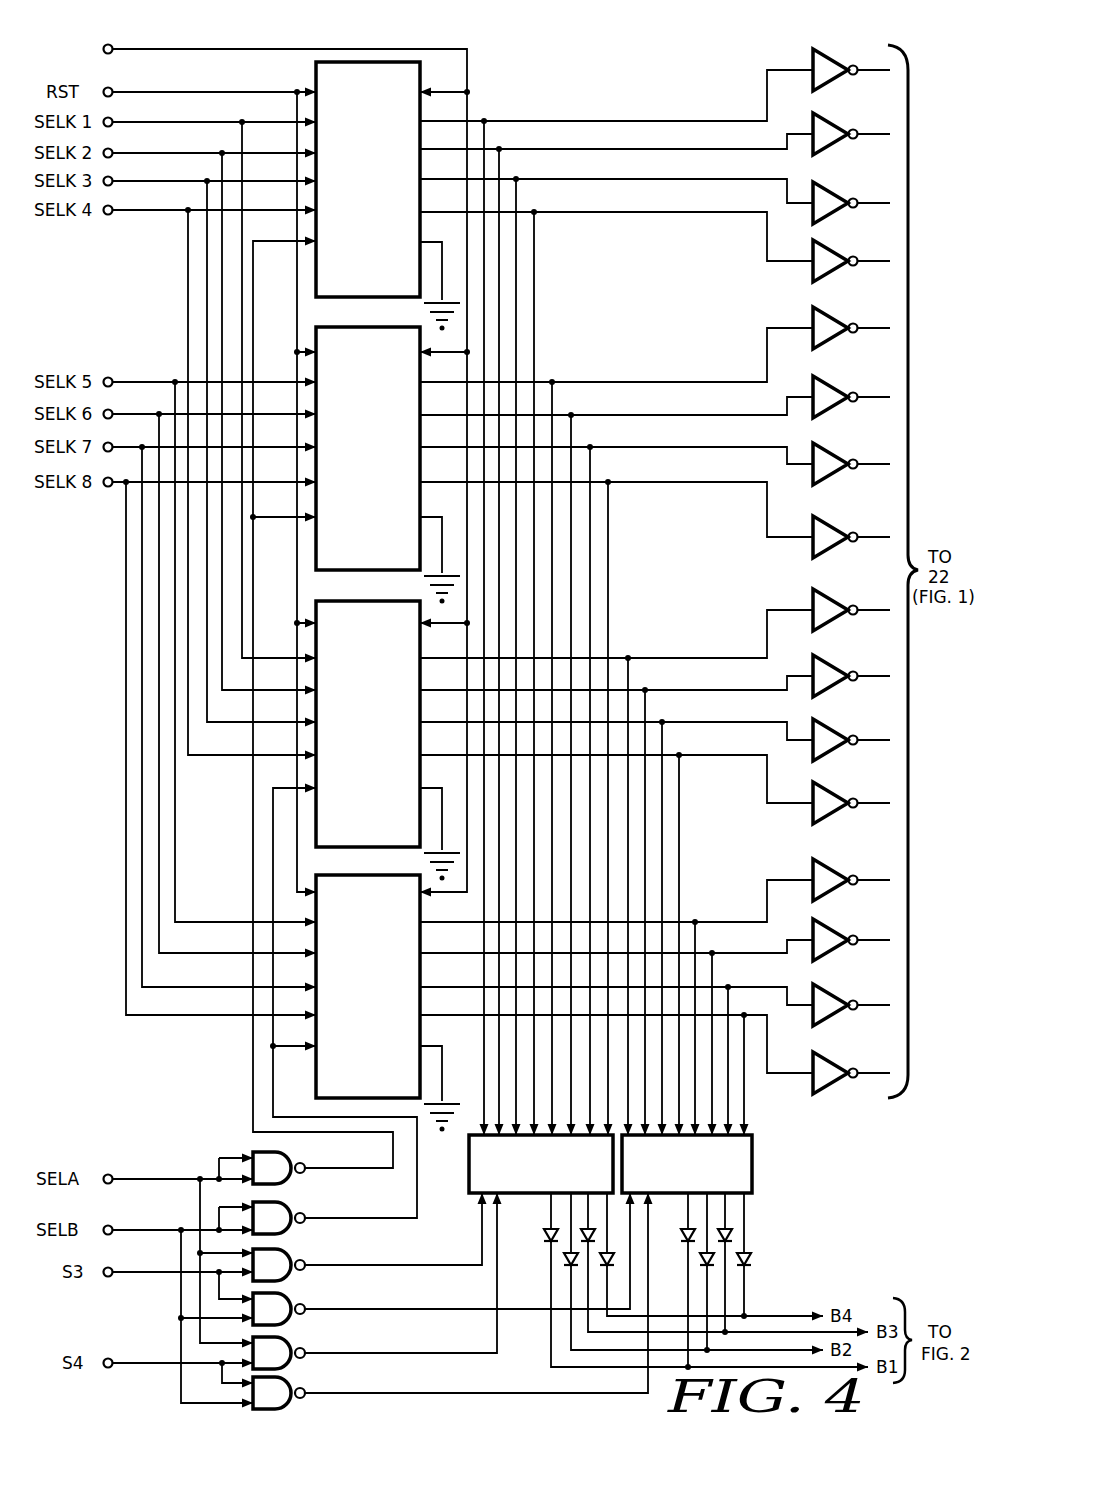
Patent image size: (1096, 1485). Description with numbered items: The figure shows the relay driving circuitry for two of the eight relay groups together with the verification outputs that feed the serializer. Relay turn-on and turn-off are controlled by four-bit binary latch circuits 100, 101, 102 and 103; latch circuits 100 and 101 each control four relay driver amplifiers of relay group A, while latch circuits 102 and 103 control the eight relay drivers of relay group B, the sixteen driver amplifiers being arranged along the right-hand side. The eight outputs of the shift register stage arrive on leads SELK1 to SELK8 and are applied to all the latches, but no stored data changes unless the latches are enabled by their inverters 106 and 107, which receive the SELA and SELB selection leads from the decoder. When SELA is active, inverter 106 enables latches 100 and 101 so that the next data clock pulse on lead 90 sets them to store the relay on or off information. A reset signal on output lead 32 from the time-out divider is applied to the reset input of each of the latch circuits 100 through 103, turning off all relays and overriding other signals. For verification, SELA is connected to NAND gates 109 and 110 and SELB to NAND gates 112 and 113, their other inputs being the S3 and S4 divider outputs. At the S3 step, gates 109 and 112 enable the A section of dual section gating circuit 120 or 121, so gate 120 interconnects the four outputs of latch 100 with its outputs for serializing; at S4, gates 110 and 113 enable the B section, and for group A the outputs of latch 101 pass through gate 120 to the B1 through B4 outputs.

The output lead 32 is at (161, 91).
The lead 90 is at (218, 50).
The four-bit binary latch circuit 100 is at (366, 298).
The four-bit binary latch circuit 101 is at (370, 326).
The four-bit binary latch circuit 102 is at (370, 601).
The four-bit binary latch circuit 103 is at (367, 875).
The inverter 106 is at (292, 1151).
The inverter 107 is at (292, 1201).
The NAND gate 109 is at (290, 1248).
The NAND gate 110 is at (288, 1336).
The NAND gate 112 is at (288, 1292).
The NAND gate 113 is at (288, 1376).
The dual section gating circuit 120 is at (469, 1182).
The dual section gating circuit 121 is at (752, 1182).